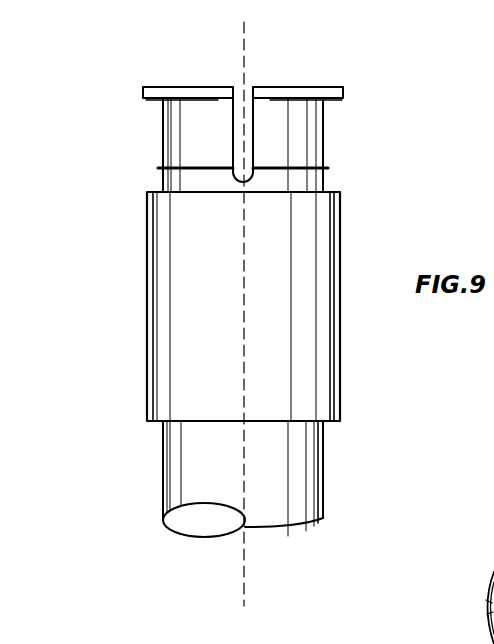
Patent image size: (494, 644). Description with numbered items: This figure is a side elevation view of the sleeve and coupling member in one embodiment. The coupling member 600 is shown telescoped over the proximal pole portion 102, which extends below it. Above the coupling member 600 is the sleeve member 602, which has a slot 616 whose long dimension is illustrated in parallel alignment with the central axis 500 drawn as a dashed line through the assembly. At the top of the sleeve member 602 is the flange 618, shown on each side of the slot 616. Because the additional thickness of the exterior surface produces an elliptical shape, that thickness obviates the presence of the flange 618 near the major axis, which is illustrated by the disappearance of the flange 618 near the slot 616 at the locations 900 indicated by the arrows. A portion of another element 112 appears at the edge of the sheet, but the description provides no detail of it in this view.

The central axis 500 is at (244, 49).
The slot 616 is at (247, 97).
The flange 618 is at (143, 94).
The sleeve member 602 is at (326, 133).
The locations 900 is at (222, 111).
The coupling member 600 is at (254, 307).
The proximal pole portion 102 is at (257, 475).
The bone 112 is at (493, 486).